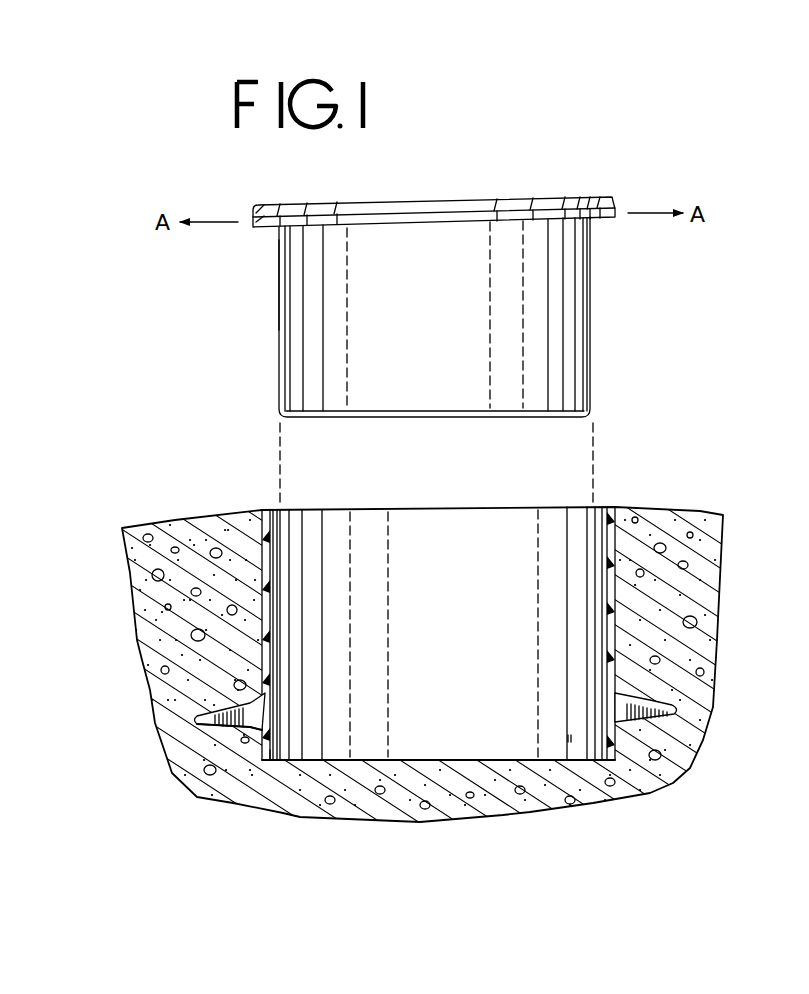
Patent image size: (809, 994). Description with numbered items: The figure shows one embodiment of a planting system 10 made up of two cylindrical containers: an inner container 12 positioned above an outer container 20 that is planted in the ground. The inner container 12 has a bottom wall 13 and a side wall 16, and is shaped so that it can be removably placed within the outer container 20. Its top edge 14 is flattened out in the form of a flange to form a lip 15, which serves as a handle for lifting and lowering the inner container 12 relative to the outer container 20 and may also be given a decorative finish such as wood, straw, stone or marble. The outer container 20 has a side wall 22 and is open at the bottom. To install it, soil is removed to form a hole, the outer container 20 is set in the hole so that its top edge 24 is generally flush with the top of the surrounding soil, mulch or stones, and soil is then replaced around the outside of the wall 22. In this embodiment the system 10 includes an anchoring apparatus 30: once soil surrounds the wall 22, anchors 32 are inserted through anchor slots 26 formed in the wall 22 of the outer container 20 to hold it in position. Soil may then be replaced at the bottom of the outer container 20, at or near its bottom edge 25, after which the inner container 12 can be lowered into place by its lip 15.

The planting system 10 is at (640, 400).
The inner container 12 is at (598, 286).
The bottom wall 13 is at (503, 427).
The top edge 14 is at (278, 206).
The lip 15 is at (258, 210).
The side wall 16 is at (272, 334).
The outer container 20 is at (623, 545).
The side wall 22 is at (257, 567).
The top edge 24 is at (312, 522).
The bottom edge 25 is at (650, 763).
The anchor slots 26 is at (252, 746).
The anchoring apparatus 30 is at (176, 721).
The anchors 32 is at (211, 738).